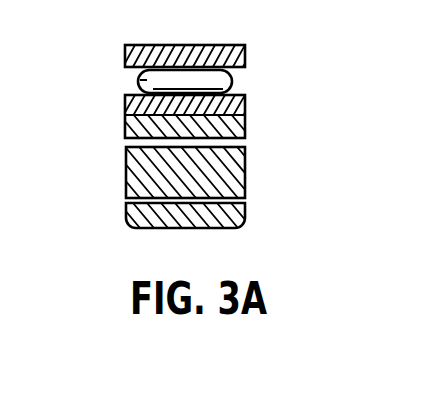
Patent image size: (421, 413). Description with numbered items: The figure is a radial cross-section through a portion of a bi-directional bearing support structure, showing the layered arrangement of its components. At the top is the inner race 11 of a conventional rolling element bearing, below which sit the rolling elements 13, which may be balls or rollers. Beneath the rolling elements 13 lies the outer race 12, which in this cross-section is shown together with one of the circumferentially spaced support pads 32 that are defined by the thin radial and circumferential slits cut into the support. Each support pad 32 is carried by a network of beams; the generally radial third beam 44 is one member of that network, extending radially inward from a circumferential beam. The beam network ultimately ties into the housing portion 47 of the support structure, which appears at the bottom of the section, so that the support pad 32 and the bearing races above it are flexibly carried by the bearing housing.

The inner race 11 is at (237, 62).
The outer race 12 is at (239, 104).
The rolling elements 13 is at (143, 81).
The support pads 32 is at (137, 125).
The third beam 44 is at (237, 168).
The housing portion 47 is at (237, 218).